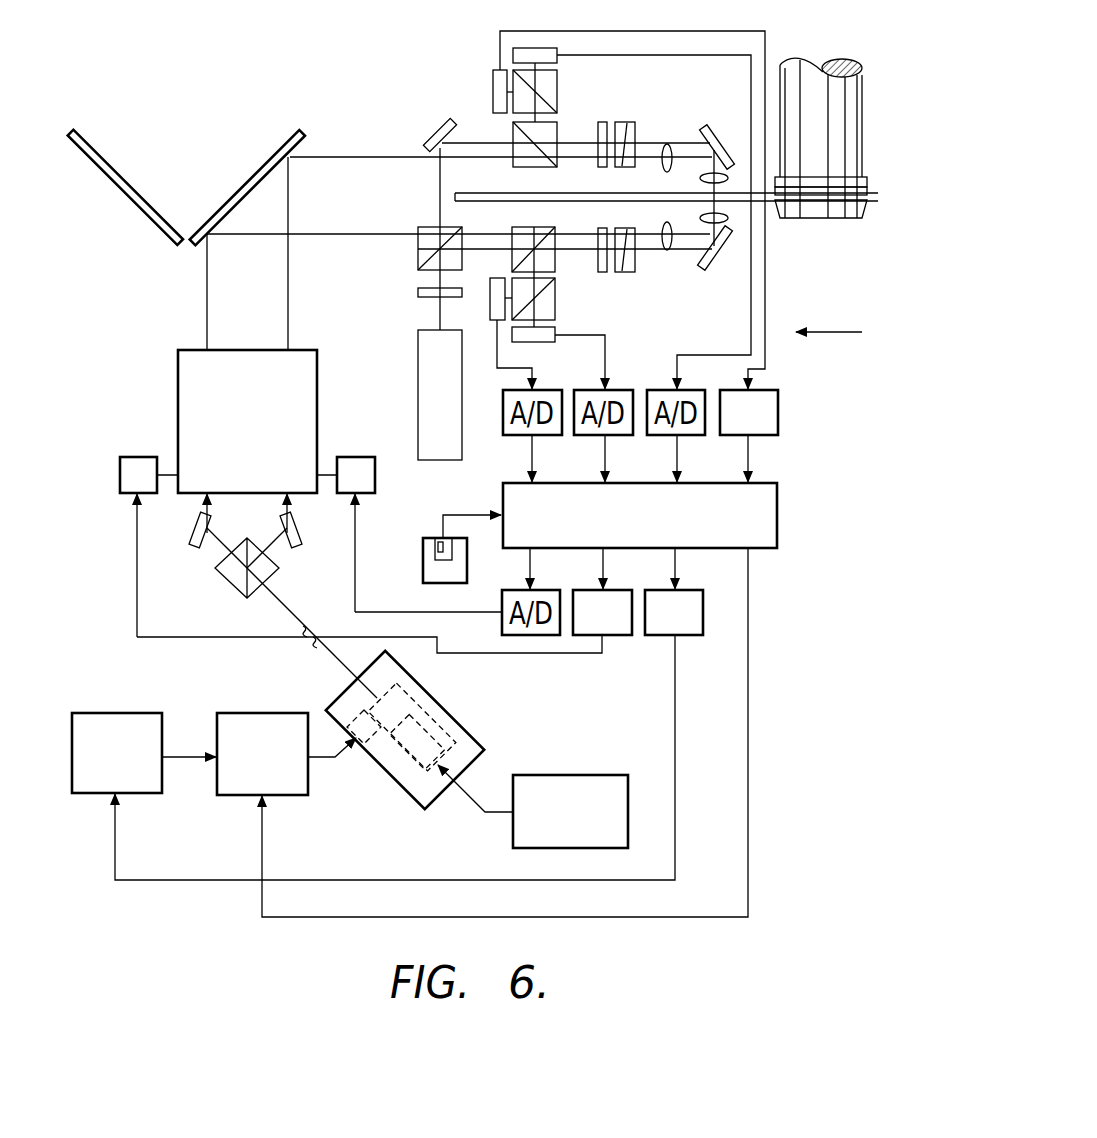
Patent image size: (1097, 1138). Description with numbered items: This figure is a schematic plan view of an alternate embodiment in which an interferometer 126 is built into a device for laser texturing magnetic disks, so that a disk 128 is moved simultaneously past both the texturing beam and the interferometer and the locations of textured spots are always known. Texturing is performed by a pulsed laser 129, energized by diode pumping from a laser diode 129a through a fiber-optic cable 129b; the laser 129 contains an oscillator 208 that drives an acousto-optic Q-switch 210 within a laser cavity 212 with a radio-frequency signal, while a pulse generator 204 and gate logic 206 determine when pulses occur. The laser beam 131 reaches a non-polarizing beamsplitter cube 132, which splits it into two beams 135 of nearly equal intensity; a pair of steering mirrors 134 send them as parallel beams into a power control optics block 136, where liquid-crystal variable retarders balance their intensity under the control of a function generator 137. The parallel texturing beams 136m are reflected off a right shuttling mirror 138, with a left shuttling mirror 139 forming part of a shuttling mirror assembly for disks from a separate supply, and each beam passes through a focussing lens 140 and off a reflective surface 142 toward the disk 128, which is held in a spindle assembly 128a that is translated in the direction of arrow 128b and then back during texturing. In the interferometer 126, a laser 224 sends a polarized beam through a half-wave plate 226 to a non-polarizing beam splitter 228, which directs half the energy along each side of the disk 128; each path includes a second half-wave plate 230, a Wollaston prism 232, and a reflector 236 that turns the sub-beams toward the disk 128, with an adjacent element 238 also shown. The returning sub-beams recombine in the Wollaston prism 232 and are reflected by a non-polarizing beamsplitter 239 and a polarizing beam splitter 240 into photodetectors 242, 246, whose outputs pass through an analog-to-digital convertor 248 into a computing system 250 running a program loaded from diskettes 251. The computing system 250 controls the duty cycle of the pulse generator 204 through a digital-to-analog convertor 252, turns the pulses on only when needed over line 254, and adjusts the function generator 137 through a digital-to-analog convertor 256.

The interferometer 126 is at (436, 78).
The disk 128 is at (455, 194).
The spindle assembly 128a is at (812, 220).
The arrow 128b is at (847, 334).
The pulsed laser 129 is at (468, 730).
The laser diode 129a is at (592, 775).
The fiber-optic cable 129b is at (465, 797).
The laser beam 131 is at (272, 598).
The non-polarizing beamsplitter cube 132 is at (233, 588).
The steering mirrors 134 is at (287, 550).
The beams 135 is at (198, 512).
The power control optics block 136 is at (178, 384).
The texturing laser beams 136m is at (207, 287).
The function generator 137 is at (133, 457).
The right shuttling mirror 138 is at (245, 188).
The left shuttling mirror 139 is at (137, 186).
The focussing lens 140 is at (665, 145).
The reflective surface 142 is at (705, 138).
The pulse generator 204 is at (127, 713).
The gate logic 206 is at (268, 713).
The oscillator 208 is at (360, 740).
The acousto-optic Q-switch 210 is at (398, 697).
The laser cavity 212 is at (413, 765).
The laser 224 is at (418, 388).
The half-wave plate 226 is at (418, 293).
The non-polarizing beam splitter 228 is at (418, 253).
The second half-wave plate 230 is at (598, 262).
The Wollaston prism 232 is at (620, 272).
The reflector 236 is at (718, 268).
The lens 238 is at (728, 220).
The non-polarizing beamsplitter 239 is at (557, 137).
The polarizing beam splitter 240 is at (557, 87).
The photodetector 242 is at (513, 51).
The photodetector 246 is at (492, 88).
The analog-to-digital convertor 248 is at (778, 412).
The computing system 250 is at (778, 517).
The diskettes 251 is at (423, 582).
The digital-to-analog convertor 252 is at (683, 636).
The line 254 is at (748, 665).
The digital-to-analog convertor 256 is at (623, 636).